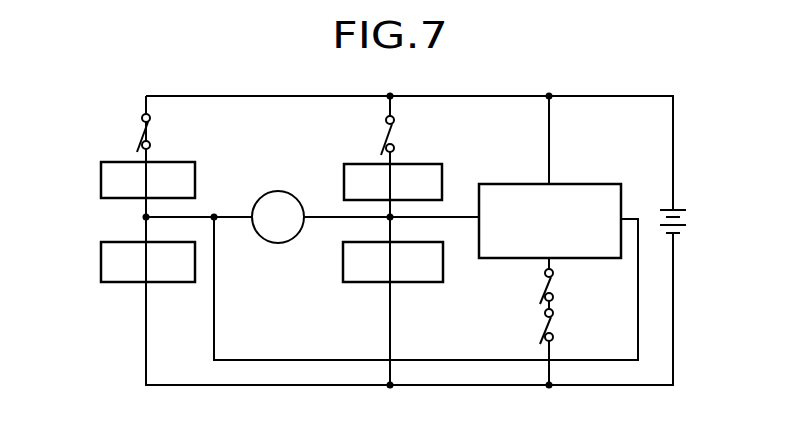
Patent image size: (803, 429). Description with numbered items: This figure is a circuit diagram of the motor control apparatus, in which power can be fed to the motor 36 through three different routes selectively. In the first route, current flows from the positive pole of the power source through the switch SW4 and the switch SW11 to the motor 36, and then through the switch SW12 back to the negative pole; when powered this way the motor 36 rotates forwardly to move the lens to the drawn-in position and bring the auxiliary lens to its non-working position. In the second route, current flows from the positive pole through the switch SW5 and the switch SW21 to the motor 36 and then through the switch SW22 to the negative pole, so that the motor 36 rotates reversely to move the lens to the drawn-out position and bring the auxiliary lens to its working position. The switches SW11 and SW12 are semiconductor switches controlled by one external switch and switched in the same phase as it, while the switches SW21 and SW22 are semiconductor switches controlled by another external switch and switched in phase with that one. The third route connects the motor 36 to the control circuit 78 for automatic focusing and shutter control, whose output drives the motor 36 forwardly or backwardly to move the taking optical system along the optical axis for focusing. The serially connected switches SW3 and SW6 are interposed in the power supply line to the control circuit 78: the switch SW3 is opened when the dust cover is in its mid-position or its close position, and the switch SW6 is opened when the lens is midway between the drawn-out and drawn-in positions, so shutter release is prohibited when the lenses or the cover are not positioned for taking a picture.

The motor 36 is at (278, 191).
The control circuit 78 is at (524, 184).
The switch SW3 is at (543, 290).
The switch SW4 is at (138, 140).
The switch SW5 is at (381, 143).
The switch SW6 is at (541, 330).
The switch SW11 is at (148, 180).
The switch SW12 is at (393, 262).
The switch SW21 is at (393, 182).
The switch SW22 is at (148, 262).